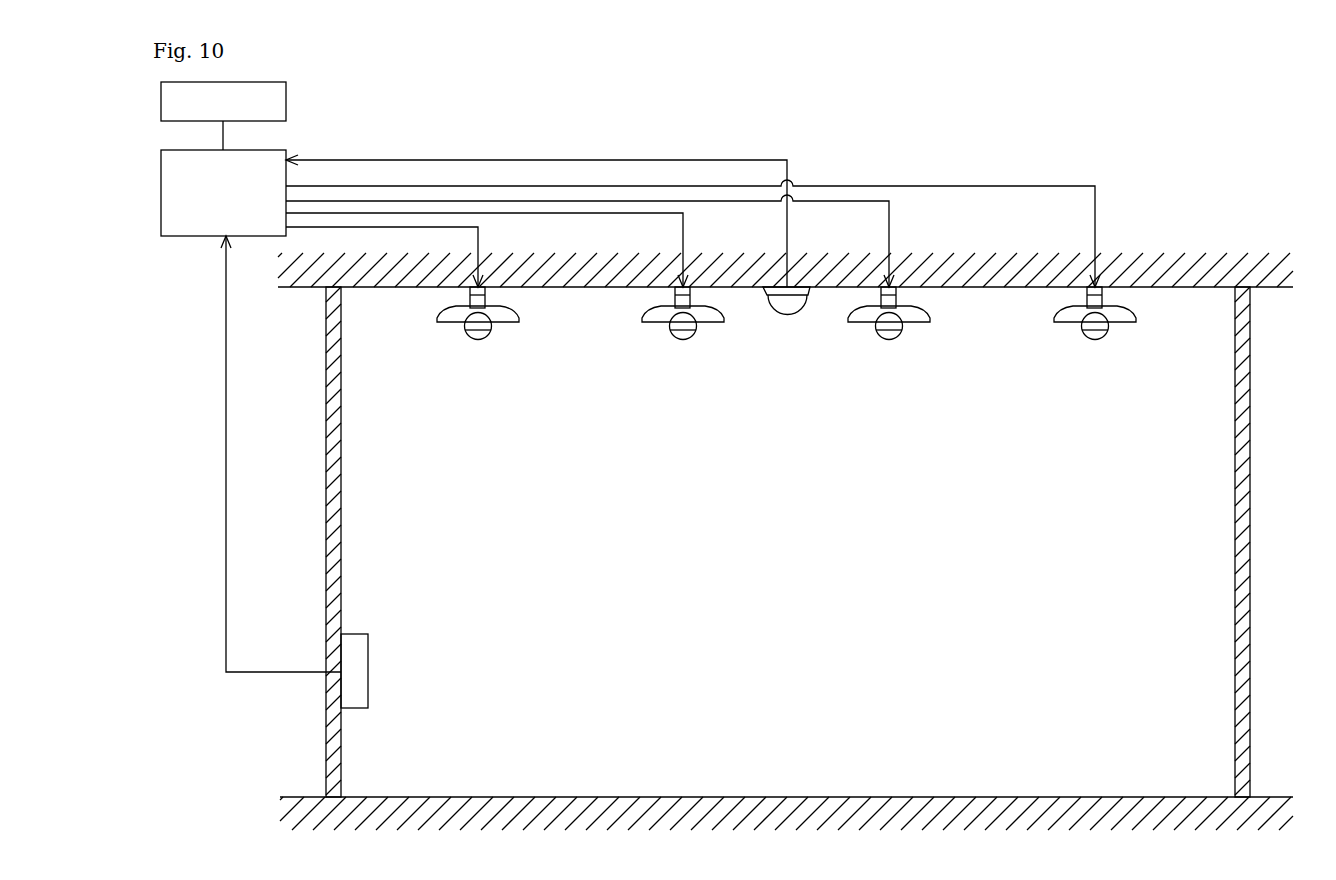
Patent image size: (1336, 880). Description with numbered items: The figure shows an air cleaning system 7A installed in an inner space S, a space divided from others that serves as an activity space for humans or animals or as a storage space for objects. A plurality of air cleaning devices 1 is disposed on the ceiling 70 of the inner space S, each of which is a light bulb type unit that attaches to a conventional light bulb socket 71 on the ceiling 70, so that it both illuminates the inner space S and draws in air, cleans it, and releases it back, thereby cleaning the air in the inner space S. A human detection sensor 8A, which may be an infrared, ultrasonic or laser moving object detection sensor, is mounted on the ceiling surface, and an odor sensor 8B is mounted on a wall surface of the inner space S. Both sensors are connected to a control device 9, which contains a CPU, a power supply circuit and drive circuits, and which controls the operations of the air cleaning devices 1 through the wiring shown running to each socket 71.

The air cleaning device 1 is at (488, 335).
The light bulb socket 71 is at (467, 295).
The human detection sensor 8A is at (790, 307).
The odor sensor 8B is at (368, 665).
The control device 9 is at (272, 150).
The ceiling 70 is at (1205, 287).
The air cleaning system 7A is at (1188, 433).
The inner space S is at (823, 599).